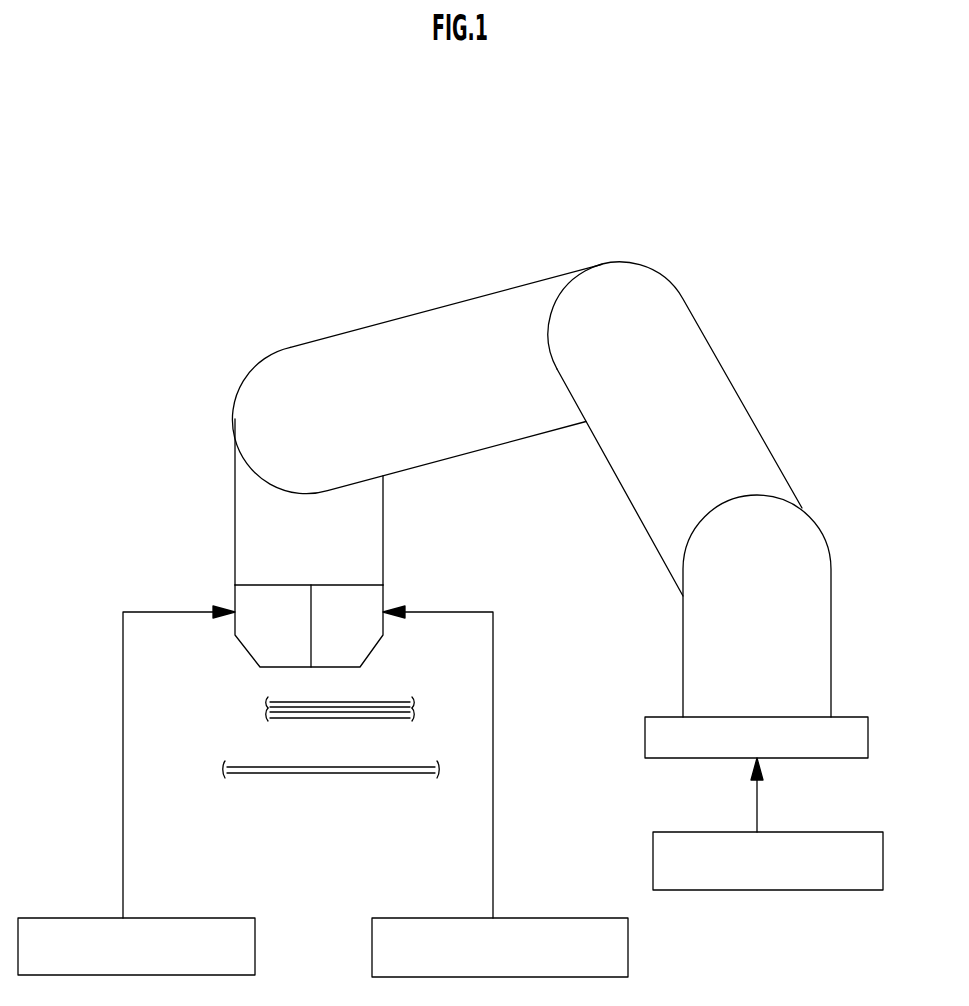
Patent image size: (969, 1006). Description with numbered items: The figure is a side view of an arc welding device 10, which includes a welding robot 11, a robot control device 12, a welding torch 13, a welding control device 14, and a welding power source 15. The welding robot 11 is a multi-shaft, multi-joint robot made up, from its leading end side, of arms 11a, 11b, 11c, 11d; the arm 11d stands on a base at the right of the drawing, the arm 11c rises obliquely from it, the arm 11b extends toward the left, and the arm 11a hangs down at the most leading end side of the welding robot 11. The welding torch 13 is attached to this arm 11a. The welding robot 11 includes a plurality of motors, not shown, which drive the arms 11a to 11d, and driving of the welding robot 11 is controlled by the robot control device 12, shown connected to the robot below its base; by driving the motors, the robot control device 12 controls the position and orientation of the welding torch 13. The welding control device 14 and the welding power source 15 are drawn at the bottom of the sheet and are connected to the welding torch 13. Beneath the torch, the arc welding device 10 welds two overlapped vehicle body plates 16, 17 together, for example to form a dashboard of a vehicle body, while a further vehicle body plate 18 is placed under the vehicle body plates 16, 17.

The arc welding device 10 is at (577, 200).
The welding robot 11 is at (725, 298).
The arm 11a is at (360, 528).
The arm 11b is at (408, 345).
The arm 11c is at (735, 424).
The arm 11d is at (808, 630).
The robot control device 12 is at (885, 860).
The welding torch 13 is at (208, 586).
The welding control device 14 is at (630, 947).
The welding power source 15 is at (257, 947).
The vehicle body plate 16 is at (382, 702).
The vehicle body plate 17 is at (288, 717).
The vehicle body plate 18 is at (337, 774).